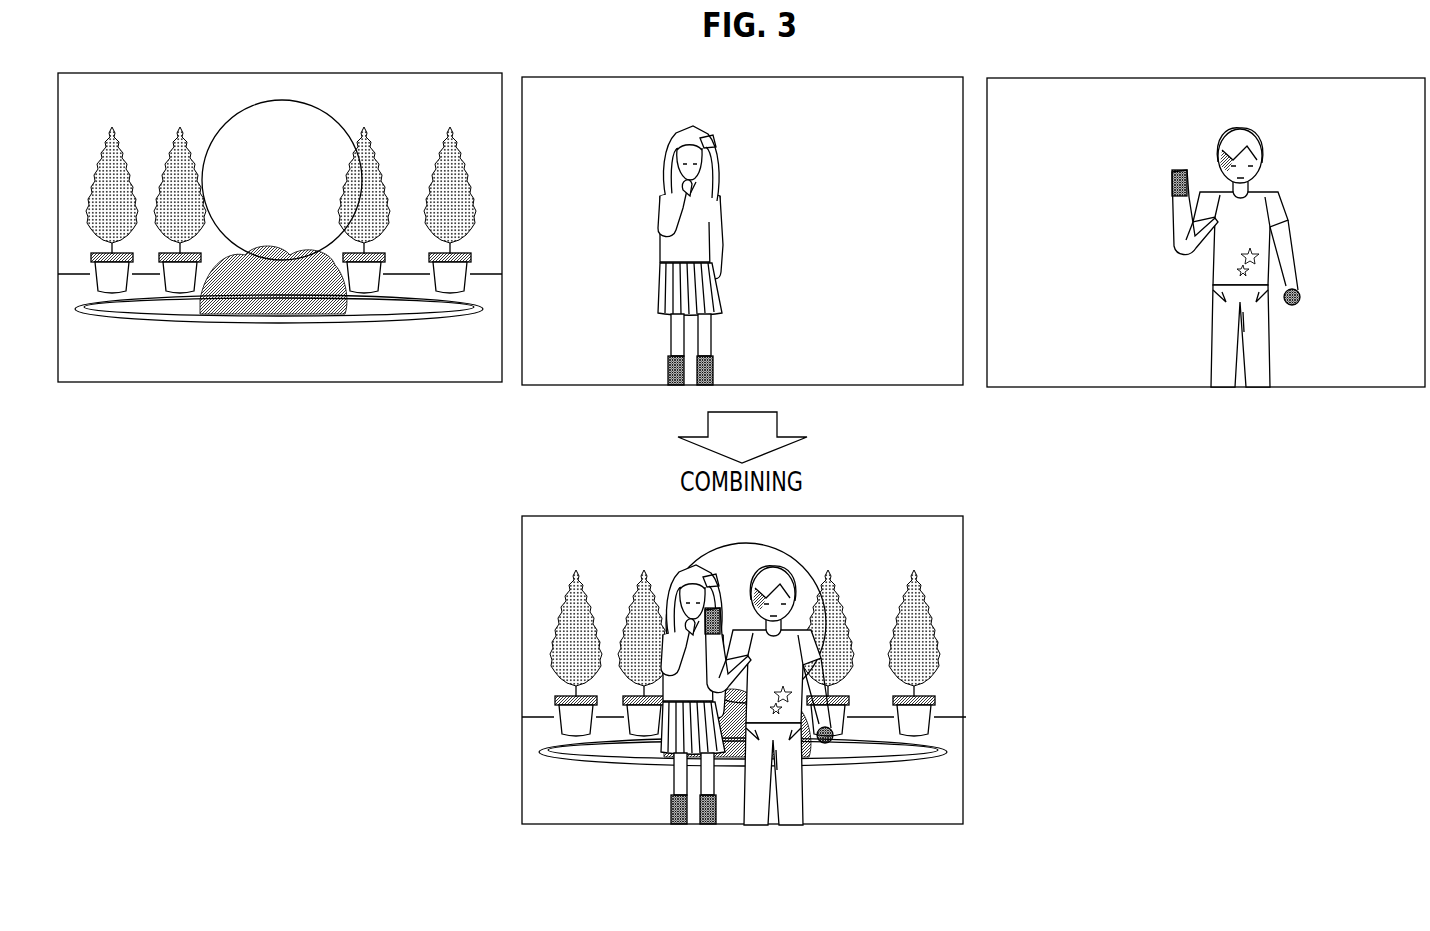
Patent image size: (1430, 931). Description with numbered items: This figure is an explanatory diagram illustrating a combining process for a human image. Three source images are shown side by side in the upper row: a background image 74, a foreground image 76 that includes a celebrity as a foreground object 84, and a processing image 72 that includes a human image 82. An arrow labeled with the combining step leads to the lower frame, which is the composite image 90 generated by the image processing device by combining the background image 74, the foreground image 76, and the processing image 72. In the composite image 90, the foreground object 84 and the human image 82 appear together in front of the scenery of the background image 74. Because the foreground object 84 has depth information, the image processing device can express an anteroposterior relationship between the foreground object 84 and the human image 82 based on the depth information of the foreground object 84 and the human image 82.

The background image 74 is at (428, 75).
The foreground image 76 is at (895, 77).
The processing image 72 is at (1355, 79).
The foreground object 84 is at (672, 135).
The human image 82 is at (1228, 127).
The composite image 90 is at (495, 536).